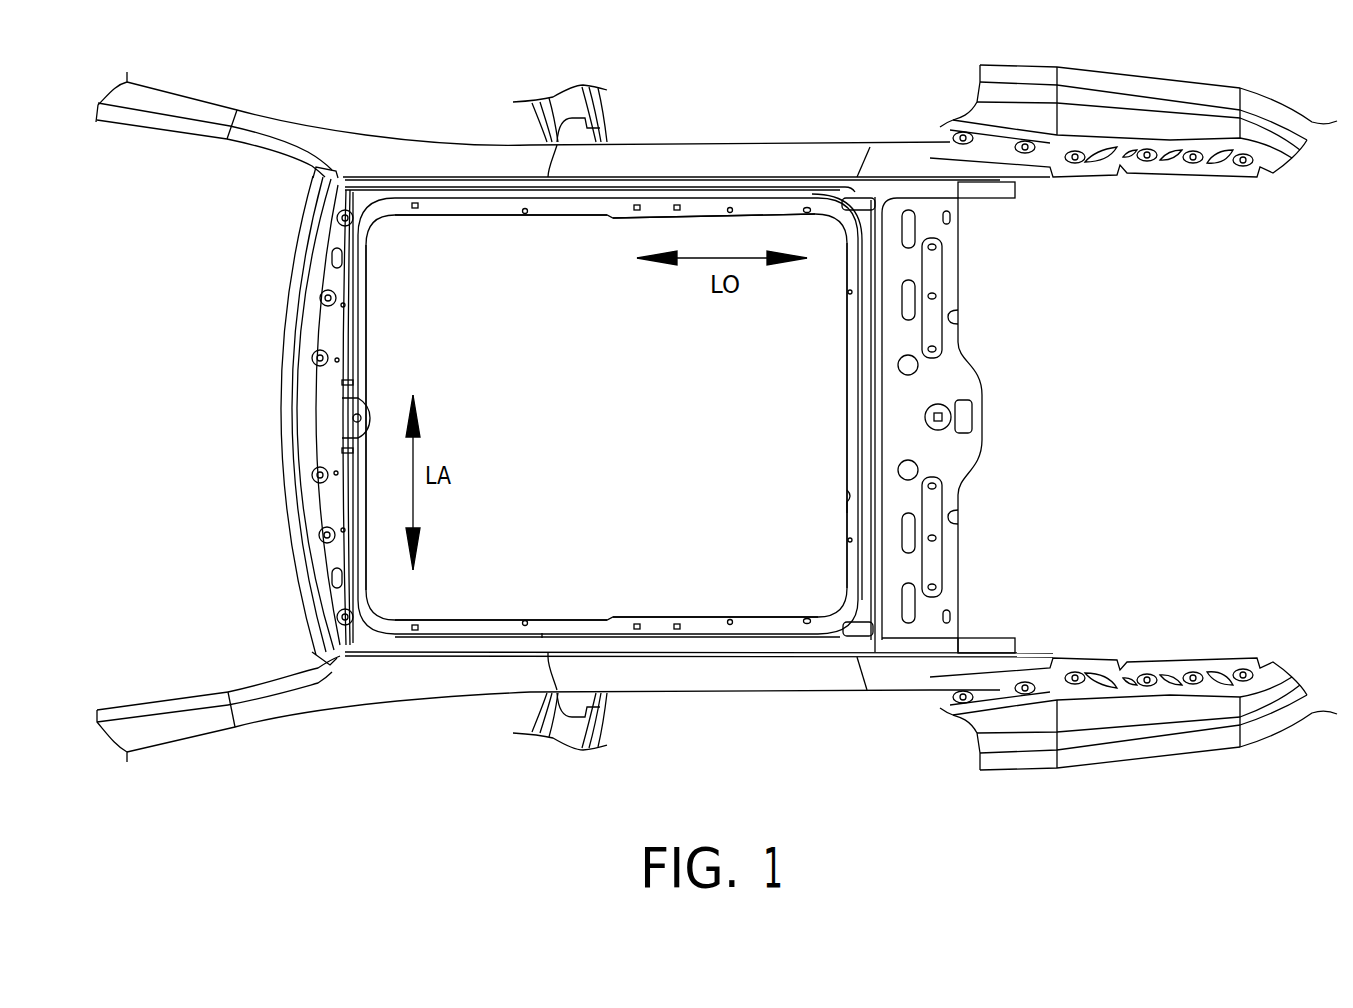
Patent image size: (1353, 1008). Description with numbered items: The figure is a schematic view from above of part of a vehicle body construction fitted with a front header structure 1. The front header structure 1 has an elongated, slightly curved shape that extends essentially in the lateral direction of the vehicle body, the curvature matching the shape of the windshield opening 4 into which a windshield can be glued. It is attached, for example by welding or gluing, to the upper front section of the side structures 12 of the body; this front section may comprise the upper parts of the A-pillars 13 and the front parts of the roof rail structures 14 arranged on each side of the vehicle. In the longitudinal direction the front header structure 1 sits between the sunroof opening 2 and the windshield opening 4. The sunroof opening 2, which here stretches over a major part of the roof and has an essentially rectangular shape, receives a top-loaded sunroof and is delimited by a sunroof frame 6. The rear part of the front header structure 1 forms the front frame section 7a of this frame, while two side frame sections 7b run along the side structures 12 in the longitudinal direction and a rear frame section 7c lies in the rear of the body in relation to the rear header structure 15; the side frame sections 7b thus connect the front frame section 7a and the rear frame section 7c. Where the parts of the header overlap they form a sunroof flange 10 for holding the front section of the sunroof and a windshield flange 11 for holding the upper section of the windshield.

The front header structure 1 is at (265, 270).
The sunroof opening 2 is at (681, 574).
The windshield opening 4 is at (182, 567).
The sunroof frame 6 is at (767, 213).
The front frame section 7a is at (357, 342).
The side frame sections 7b is at (463, 210).
The rear frame section 7c is at (847, 418).
The sunroof flange 10 is at (367, 265).
The windshield flange 11 is at (285, 345).
The side structures 12 is at (355, 152).
The A-pillars 13 is at (180, 107).
The roof rail structures 14 is at (637, 163).
The rear header structure 15 is at (930, 380).